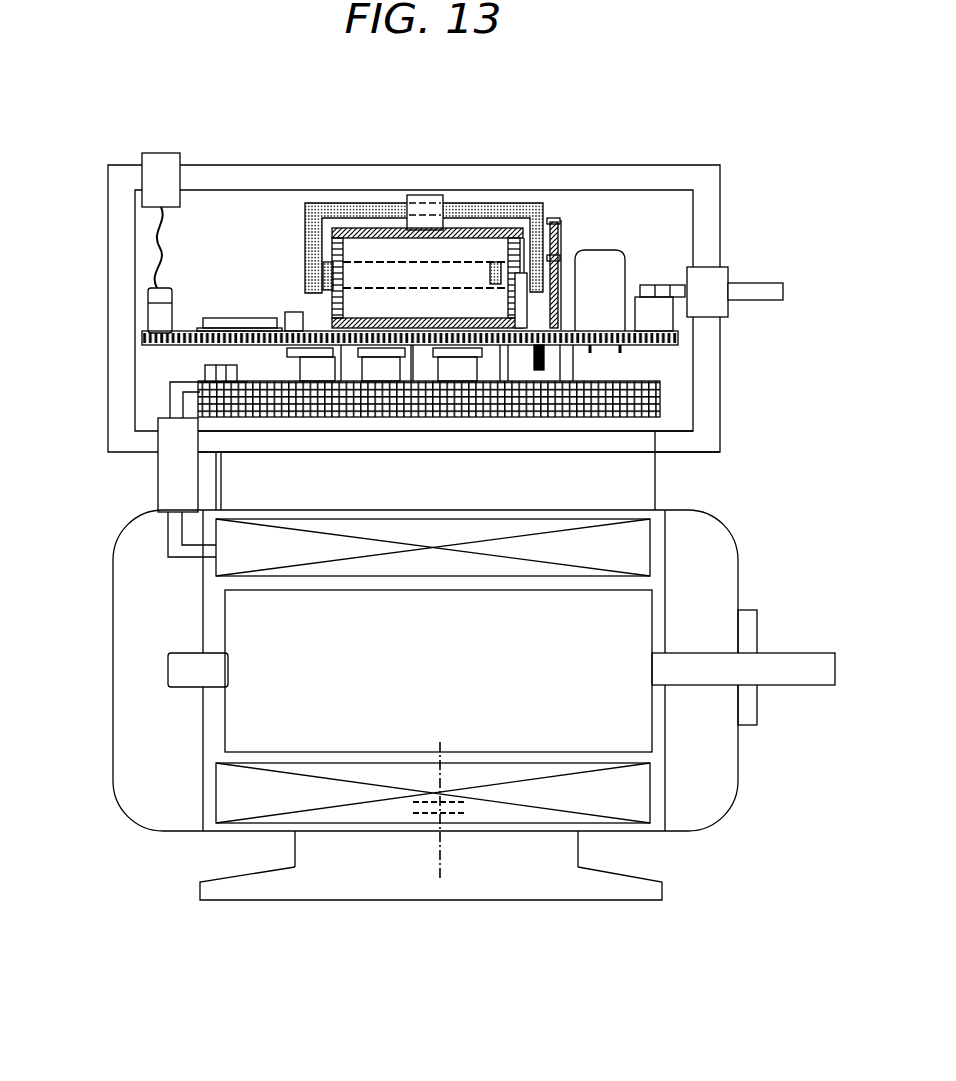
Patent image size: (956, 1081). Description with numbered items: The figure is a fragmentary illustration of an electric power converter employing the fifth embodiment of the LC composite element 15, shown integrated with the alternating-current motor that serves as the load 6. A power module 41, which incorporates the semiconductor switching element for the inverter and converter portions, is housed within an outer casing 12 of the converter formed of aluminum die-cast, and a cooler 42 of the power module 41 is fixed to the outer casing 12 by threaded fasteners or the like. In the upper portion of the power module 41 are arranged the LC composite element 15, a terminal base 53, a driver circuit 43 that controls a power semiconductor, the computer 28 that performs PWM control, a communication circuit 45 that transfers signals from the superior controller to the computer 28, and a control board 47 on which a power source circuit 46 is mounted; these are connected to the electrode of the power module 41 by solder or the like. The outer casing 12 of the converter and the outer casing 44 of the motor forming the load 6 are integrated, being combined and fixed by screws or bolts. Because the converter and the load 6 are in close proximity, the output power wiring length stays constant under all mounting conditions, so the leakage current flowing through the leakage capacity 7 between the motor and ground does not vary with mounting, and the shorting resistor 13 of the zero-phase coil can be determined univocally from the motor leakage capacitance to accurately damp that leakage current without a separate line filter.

The load 6 is at (273, 710).
The leakage capacity 7 is at (455, 812).
The outer casing 12 is at (625, 178).
The shorting resistor 13 is at (543, 368).
The LC composite element 15 is at (308, 157).
The computer 28 is at (232, 317).
The power module 41 is at (665, 395).
The cooler 42 is at (657, 430).
The driver circuit 43 is at (630, 420).
The outer casing 44 is at (667, 508).
The communication circuit 45 is at (200, 410).
The power source circuit 46 is at (262, 418).
The control board 47 is at (177, 348).
The terminal base 53 is at (657, 313).